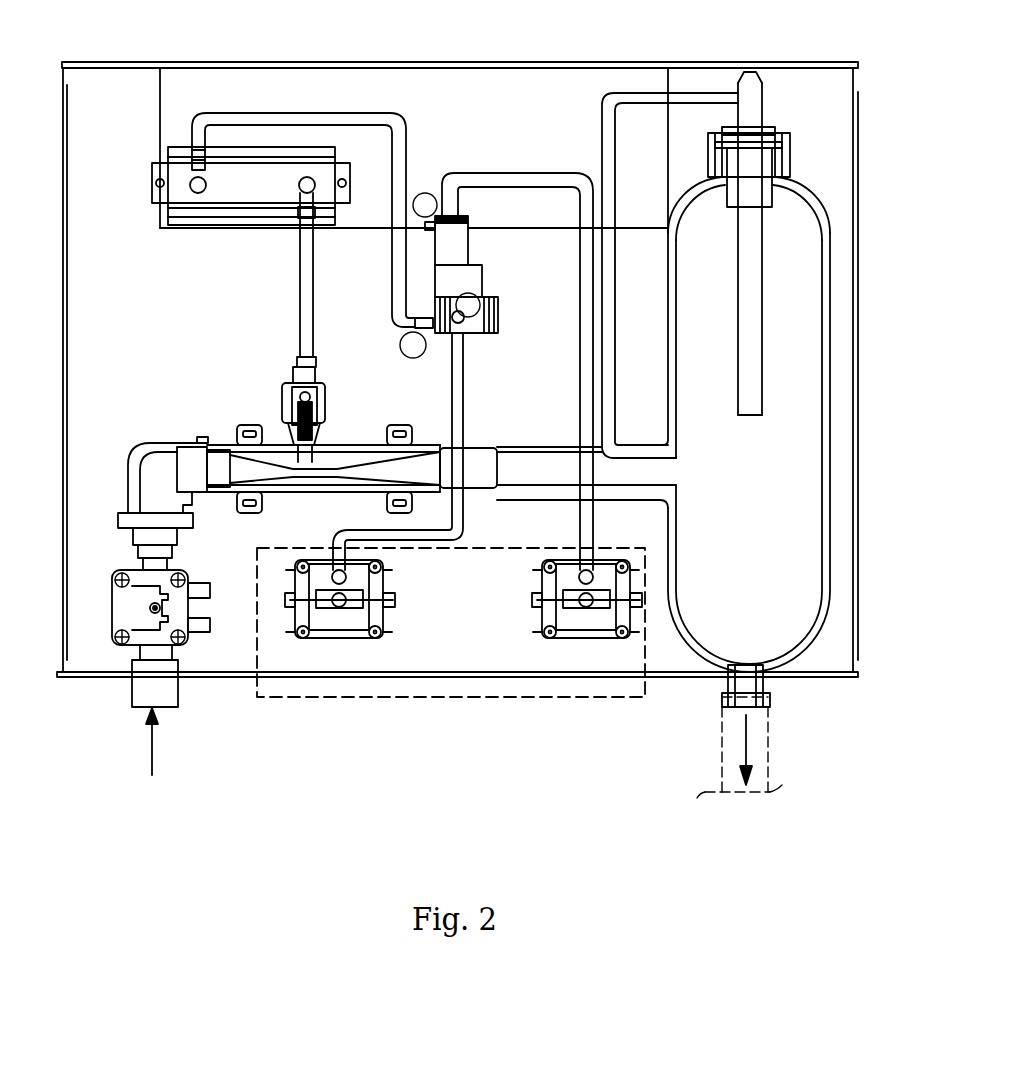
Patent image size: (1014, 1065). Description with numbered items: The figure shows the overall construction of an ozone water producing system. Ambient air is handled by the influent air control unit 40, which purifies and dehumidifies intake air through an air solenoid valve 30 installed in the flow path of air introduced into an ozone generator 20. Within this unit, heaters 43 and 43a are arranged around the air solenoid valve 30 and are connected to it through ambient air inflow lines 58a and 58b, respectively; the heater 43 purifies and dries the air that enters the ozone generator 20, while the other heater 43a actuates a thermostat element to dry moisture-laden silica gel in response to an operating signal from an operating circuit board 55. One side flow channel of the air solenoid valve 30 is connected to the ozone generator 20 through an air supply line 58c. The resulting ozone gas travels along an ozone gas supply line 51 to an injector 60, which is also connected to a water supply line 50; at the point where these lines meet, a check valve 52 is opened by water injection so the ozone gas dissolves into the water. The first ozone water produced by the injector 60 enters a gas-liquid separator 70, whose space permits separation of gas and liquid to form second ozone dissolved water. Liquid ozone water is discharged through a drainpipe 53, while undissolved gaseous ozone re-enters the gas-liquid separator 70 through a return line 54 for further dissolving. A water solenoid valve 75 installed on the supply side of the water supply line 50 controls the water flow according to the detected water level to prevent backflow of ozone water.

The operating circuit board 55 is at (498, 73).
The ozone generator 20 is at (152, 170).
The air supply line 58c is at (297, 103).
The ambient air inflow line 58b is at (531, 172).
The air solenoid valve 30 is at (476, 252).
The ambient air inflow line 58a is at (453, 391).
The ozone gas supply line 51 is at (302, 289).
The check valve 52 is at (285, 390).
The water supply line 50 is at (137, 533).
The water solenoid valve 75 is at (115, 622).
The injector 60 is at (248, 472).
The influent air control unit 40 is at (443, 697).
The heater 43 is at (336, 650).
The heater 43a is at (580, 648).
The return line 54 is at (613, 265).
The gas-liquid separator 70 is at (826, 301).
The drainpipe 53 is at (770, 745).